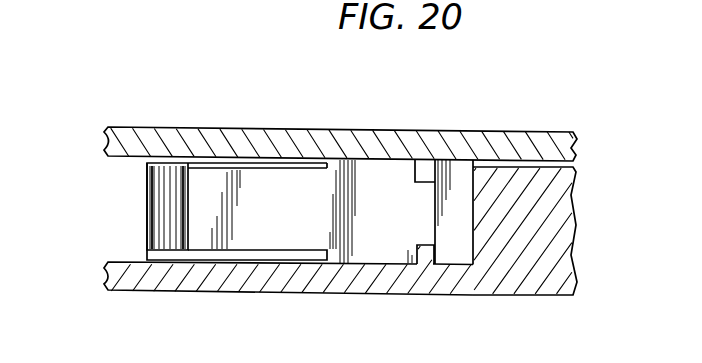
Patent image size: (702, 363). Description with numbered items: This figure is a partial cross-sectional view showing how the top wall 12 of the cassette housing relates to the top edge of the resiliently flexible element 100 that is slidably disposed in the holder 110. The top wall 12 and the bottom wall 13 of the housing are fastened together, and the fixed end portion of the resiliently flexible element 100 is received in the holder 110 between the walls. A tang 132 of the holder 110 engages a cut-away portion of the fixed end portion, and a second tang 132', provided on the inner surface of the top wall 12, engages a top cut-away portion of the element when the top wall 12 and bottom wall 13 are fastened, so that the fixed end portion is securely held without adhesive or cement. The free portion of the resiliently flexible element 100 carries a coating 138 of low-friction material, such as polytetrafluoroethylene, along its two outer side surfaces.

The top wall 12 is at (166, 126).
The bottom wall 13 is at (223, 292).
The resiliently flexible element 100 is at (276, 180).
The holder 110 is at (484, 126).
The tang 132 is at (420, 294).
The tang 132' is at (440, 126).
The coating 138 is at (152, 217).